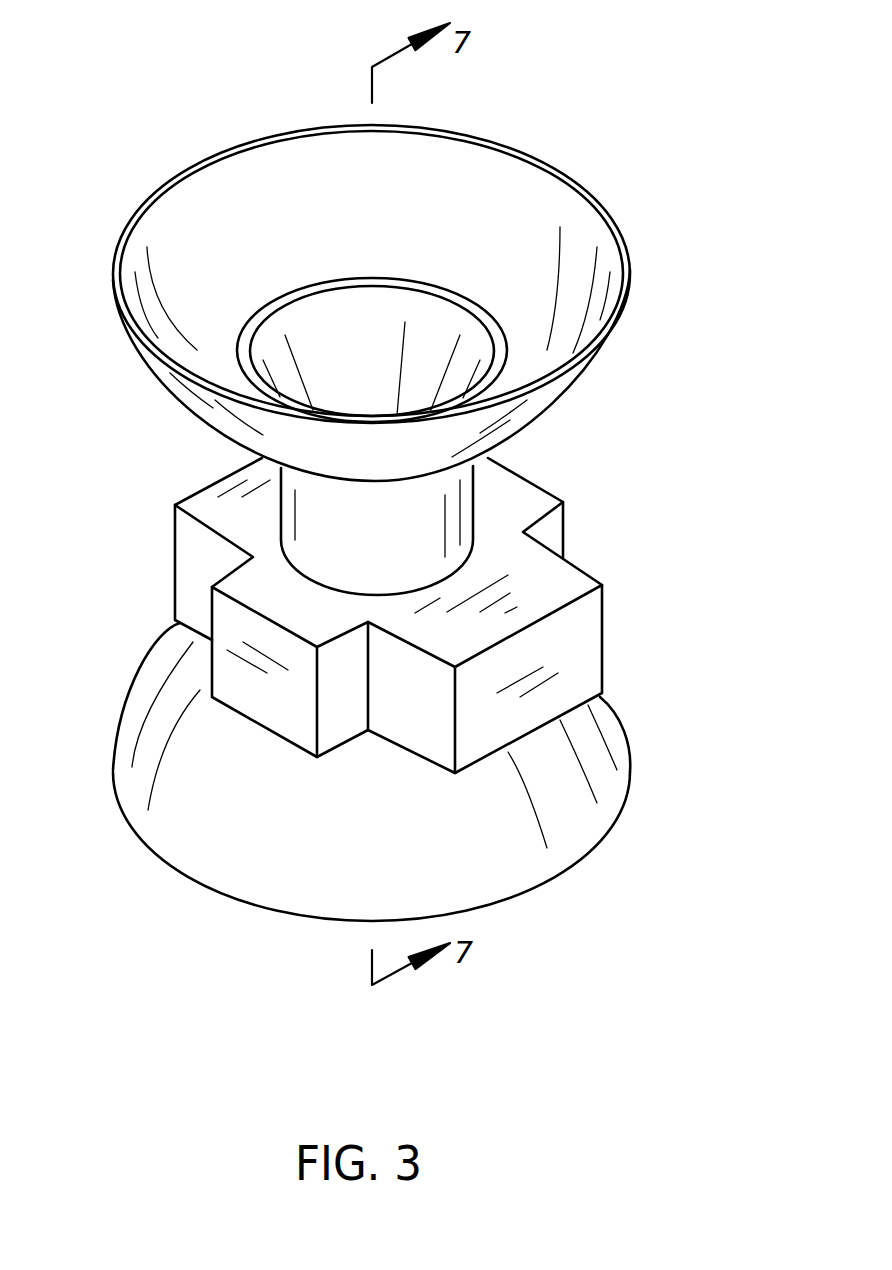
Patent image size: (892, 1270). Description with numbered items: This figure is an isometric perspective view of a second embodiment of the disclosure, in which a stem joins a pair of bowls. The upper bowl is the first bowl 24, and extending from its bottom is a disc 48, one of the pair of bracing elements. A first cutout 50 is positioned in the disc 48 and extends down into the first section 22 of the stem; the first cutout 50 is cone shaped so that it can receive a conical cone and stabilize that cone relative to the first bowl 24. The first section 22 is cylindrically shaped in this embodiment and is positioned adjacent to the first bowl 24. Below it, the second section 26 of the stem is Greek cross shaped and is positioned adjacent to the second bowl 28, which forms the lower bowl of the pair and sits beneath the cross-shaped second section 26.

The first section 22 is at (432, 497).
The first bowl 24 is at (573, 373).
The second section 26 is at (503, 613).
The second bowl 28 is at (565, 800).
The disc 48 is at (470, 322).
The first cutout 50 is at (387, 335).